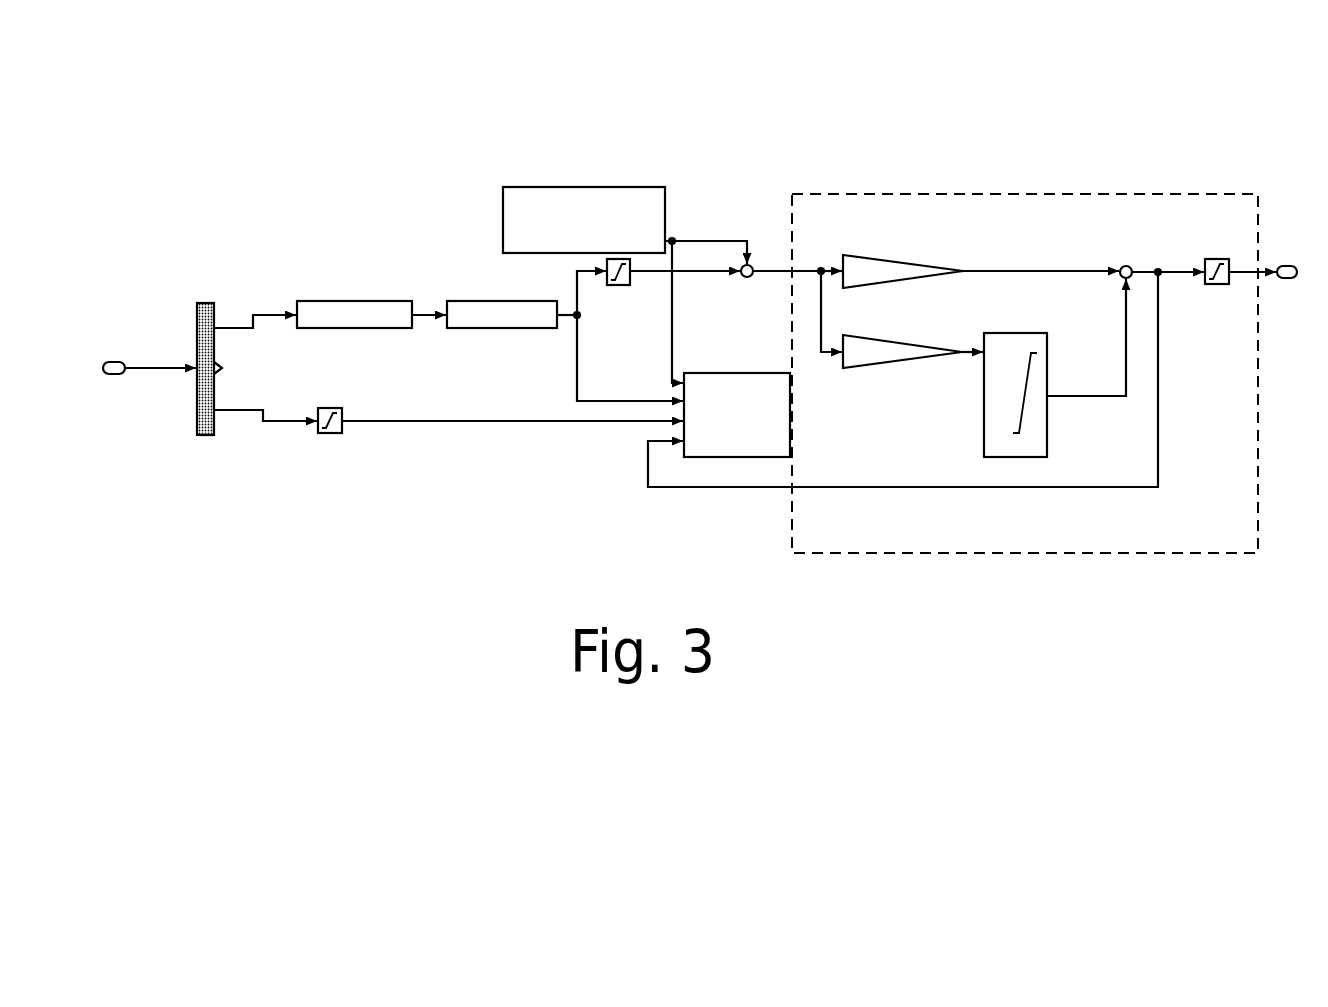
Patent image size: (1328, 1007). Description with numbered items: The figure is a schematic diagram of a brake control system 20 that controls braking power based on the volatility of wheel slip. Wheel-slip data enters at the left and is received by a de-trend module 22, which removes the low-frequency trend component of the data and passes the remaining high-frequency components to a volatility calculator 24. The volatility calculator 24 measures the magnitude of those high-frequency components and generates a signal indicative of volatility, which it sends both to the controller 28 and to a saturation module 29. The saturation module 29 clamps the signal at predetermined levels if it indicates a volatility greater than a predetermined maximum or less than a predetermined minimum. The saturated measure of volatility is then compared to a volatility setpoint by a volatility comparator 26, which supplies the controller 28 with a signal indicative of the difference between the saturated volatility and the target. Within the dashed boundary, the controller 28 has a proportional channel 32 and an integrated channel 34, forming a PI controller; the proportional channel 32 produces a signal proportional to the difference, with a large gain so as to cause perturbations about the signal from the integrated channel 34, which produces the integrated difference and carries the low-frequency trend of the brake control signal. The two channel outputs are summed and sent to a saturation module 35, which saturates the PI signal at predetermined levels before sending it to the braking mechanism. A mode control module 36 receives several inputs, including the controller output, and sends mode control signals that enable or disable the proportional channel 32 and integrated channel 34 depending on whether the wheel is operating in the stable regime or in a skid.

The brake control system 20 is at (1090, 144).
The de-trend module 22 is at (347, 310).
The volatility calculator 24 is at (490, 310).
The volatility comparator 26 is at (747, 280).
The controller 28 is at (1038, 530).
The saturation module 29 is at (621, 290).
The proportional channel 32 is at (900, 262).
The integrated channel 34 is at (946, 332).
The saturation module 35 is at (1212, 290).
The mode control module 36 is at (718, 452).